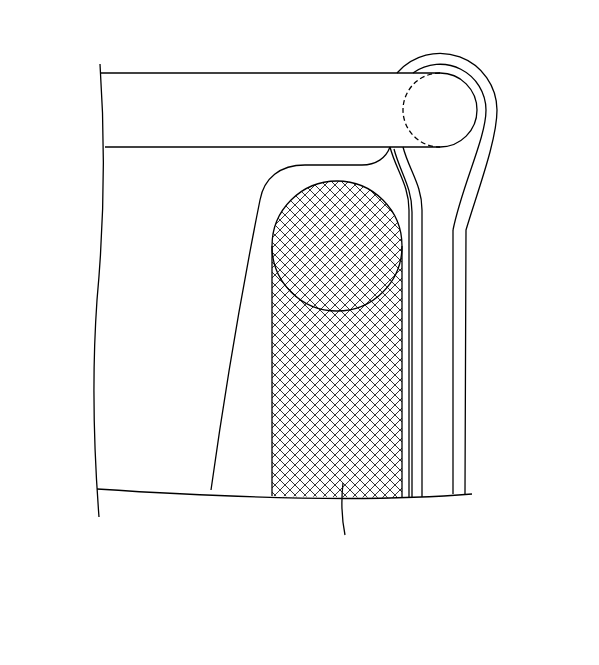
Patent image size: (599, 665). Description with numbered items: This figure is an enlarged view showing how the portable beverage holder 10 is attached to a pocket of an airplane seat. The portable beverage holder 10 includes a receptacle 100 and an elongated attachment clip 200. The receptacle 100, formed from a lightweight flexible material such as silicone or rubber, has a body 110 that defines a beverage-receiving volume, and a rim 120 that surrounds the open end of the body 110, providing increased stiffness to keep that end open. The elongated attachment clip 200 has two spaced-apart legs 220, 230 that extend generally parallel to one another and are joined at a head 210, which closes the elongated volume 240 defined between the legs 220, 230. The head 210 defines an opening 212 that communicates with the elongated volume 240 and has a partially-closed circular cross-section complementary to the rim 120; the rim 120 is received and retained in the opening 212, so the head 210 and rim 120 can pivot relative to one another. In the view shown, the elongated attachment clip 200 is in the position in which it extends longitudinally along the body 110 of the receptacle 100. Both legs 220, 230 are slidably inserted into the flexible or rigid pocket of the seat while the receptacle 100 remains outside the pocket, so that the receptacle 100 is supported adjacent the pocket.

The portable beverage holder 10 is at (296, 52).
The receptacle 100 is at (206, 52).
The body 110 is at (103, 305).
The rim 120 is at (115, 108).
The elongated attachment clip 200 is at (478, 321).
The head 210 is at (480, 70).
The opening 212 is at (462, 143).
The leg 220 is at (465, 382).
The leg 230 is at (423, 470).
The elongated volume 240 is at (436, 430).